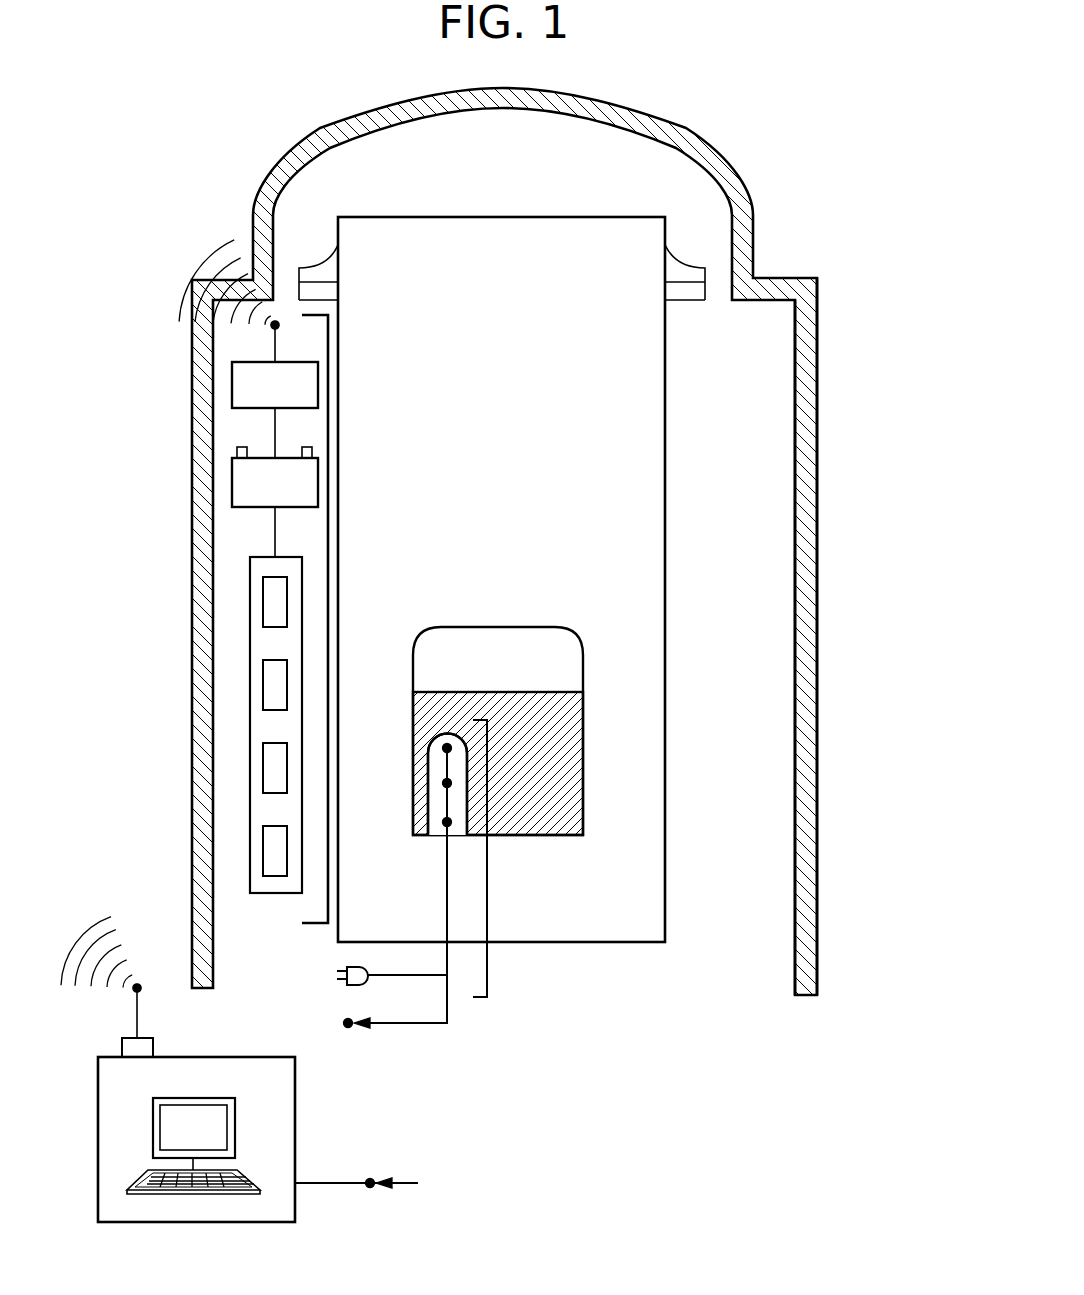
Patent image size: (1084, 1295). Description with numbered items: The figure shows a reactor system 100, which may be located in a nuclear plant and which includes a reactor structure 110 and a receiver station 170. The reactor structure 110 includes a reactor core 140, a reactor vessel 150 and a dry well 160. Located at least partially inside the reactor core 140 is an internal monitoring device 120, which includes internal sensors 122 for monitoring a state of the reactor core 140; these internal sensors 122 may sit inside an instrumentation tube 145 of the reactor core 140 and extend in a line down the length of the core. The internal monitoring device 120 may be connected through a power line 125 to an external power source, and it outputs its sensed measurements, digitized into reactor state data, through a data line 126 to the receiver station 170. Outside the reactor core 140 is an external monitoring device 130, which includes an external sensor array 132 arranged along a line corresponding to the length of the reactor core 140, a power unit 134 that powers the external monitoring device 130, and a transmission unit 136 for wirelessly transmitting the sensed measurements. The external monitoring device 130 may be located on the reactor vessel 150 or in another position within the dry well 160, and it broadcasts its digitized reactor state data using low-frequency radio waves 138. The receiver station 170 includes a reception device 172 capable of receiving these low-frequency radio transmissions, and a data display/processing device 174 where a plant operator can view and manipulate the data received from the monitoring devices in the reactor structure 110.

The reactor system 100 is at (823, 108).
The reactor structure 110 is at (800, 287).
The internal monitoring device 120 is at (487, 870).
The internal sensors 122 is at (445, 826).
The power line 125 is at (347, 968).
The data line 126 is at (358, 1027).
The external monitoring device 130 is at (328, 362).
The external sensor array 132 is at (257, 905).
The power unit 134 is at (293, 496).
The transmission unit 136 is at (293, 399).
The low-frequency radio waves 138 is at (197, 263).
The reactor core 140 is at (583, 652).
The instrumentation tube 145 is at (427, 757).
The reactor vessel 150 is at (665, 735).
The dry well 160 is at (777, 428).
The receiver station 170 is at (295, 1075).
The reception device 172 is at (150, 1047).
The data display/processing device 174 is at (209, 1141).